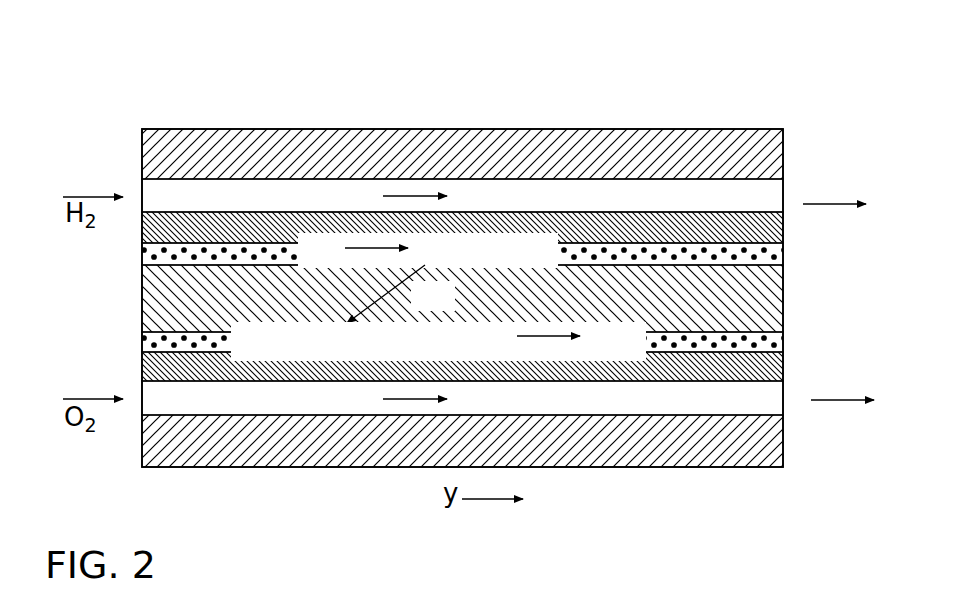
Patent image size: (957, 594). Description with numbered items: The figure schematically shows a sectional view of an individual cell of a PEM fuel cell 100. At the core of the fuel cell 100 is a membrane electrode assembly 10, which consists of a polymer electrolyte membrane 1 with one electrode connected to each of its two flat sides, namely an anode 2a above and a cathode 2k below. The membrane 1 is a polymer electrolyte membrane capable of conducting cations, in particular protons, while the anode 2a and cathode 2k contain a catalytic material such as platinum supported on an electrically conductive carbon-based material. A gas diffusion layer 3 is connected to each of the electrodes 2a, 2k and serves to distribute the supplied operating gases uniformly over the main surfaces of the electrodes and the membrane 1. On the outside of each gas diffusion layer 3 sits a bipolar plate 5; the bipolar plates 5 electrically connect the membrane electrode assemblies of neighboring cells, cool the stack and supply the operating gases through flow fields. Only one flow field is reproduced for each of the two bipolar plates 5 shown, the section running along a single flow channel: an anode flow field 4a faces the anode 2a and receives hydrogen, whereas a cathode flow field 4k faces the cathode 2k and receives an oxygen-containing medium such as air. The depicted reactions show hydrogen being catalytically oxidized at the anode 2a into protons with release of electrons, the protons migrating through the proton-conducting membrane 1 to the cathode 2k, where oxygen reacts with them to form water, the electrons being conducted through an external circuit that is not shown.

The PEM fuel cell 100 is at (608, 115).
The bipolar plate 5 is at (771, 156).
The anode flow field 4a is at (771, 194).
The cathode flow field 4k is at (773, 406).
The gas diffusion layer 3 is at (771, 231).
The anode 2a is at (770, 260).
The cathode 2k is at (770, 345).
The polymer electrolyte membrane 1 is at (769, 302).
The membrane electrode assembly 10 is at (462, 299).